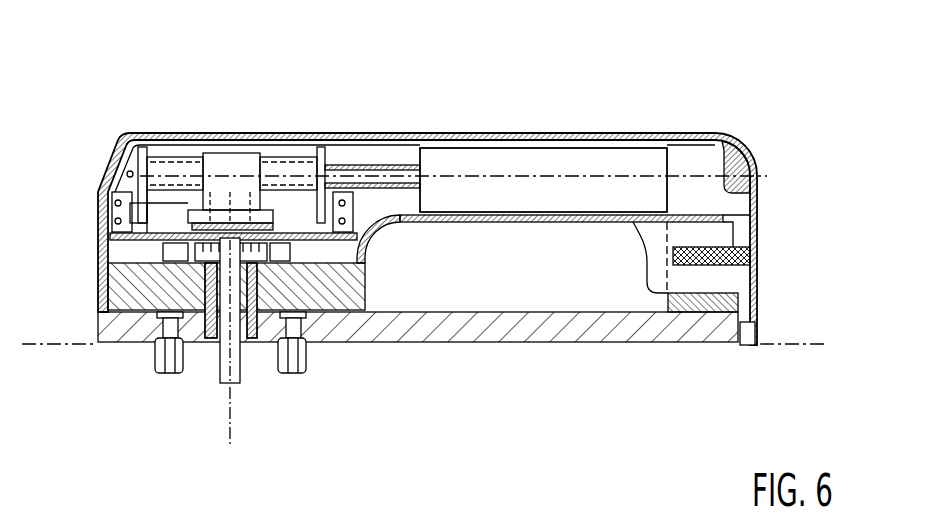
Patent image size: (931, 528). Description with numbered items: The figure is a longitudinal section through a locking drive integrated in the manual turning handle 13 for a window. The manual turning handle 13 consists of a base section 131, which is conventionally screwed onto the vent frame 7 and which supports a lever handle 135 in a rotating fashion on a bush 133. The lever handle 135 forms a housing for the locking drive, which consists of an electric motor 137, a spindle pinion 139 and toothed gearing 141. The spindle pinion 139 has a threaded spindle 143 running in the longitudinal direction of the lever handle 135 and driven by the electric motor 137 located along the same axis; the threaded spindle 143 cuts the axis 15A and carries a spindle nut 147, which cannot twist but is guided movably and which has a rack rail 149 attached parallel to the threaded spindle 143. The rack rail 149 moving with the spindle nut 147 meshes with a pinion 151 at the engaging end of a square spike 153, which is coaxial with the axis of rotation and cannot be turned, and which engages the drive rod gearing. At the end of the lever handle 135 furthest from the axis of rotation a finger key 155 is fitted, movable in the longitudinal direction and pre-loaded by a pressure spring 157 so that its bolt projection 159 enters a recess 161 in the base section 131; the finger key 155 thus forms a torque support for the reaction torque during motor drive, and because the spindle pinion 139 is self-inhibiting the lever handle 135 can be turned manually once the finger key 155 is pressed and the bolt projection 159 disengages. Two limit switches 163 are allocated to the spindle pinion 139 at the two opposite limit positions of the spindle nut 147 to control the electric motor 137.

The manual turning handle 13 is at (553, 125).
The base section 131 is at (472, 333).
The bush 133 is at (259, 345).
The lever handle 135 is at (362, 136).
The electric motor 137 is at (463, 158).
The spindle pinion 139 is at (180, 158).
The toothed gearing 141 is at (140, 256).
The threaded spindle 143 is at (292, 168).
The spindle nut 147 is at (222, 165).
The rack rail 149 is at (326, 342).
The pinion 151 is at (137, 318).
The square spike 153 is at (222, 368).
The finger key 155 is at (656, 252).
The pressure spring 157 is at (758, 253).
The bolt projection 159 is at (750, 322).
The recess 161 is at (748, 347).
The limit switches 163 is at (100, 200).
The vent frame 7 is at (810, 350).
The axis 15A is at (230, 436).